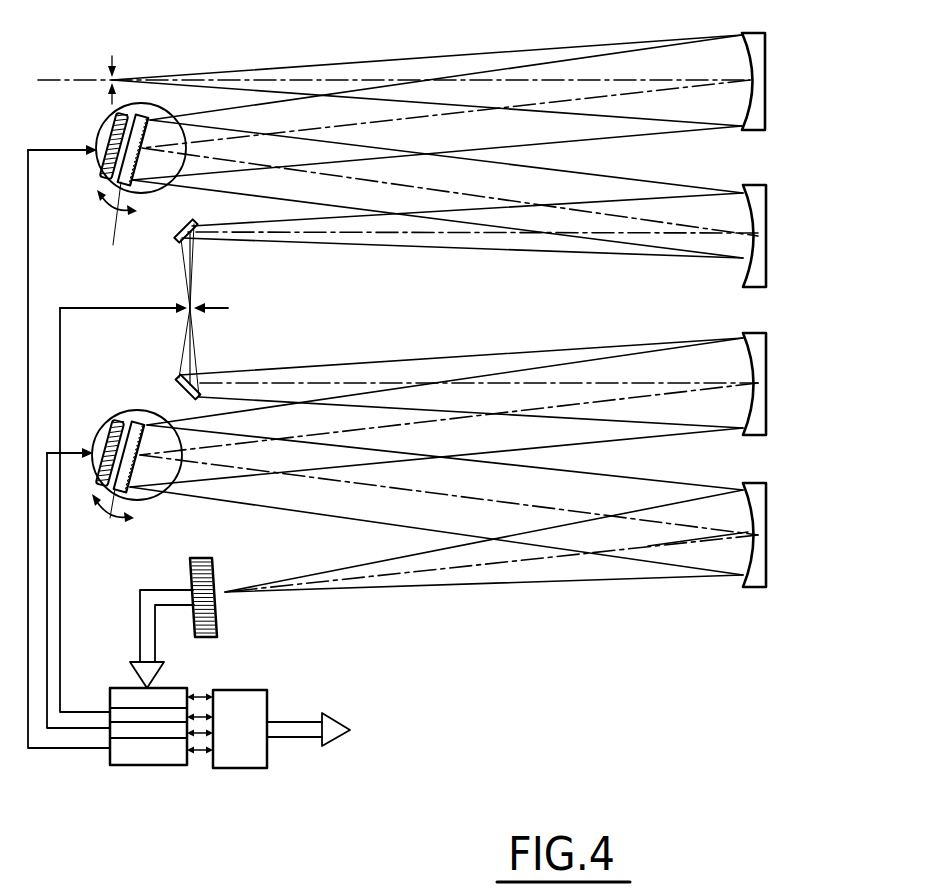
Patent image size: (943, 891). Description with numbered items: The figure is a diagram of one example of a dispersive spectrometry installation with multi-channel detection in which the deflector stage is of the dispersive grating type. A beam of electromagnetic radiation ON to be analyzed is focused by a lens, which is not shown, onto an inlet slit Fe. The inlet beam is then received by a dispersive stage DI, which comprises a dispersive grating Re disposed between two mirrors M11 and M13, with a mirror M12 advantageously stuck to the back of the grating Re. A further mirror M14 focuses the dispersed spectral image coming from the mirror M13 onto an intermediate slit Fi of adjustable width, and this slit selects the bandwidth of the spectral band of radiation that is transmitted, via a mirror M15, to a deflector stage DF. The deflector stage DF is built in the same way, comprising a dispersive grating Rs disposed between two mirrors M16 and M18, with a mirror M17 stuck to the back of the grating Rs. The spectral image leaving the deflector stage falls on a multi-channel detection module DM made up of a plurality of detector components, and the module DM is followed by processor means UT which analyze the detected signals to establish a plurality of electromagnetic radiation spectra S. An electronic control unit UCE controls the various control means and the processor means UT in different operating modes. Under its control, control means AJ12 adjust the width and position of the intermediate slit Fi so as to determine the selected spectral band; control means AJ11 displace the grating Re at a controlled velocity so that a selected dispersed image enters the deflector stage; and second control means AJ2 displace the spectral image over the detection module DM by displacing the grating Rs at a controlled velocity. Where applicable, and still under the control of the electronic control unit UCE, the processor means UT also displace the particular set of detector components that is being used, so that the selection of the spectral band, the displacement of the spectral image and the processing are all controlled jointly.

The beam of electromagnetic radiation ON is at (66, 80).
The inlet slit Fe is at (122, 44).
The mirror M11 is at (765, 57).
The mirror M12 is at (107, 185).
The dispersive grating Re is at (96, 162).
The dispersive stage DI is at (160, 186).
The mirror M14 is at (175, 239).
The mirror M13 is at (766, 230).
The intermediate slit Fi is at (214, 308).
The mirror M15 is at (177, 377).
The deflector stage DF is at (114, 465).
The dispersive grating Rs is at (141, 412).
The mirror M16 is at (766, 343).
The mirror M17 is at (110, 518).
The mirror M18 is at (766, 528).
The multi-channel detection module DM is at (216, 632).
The processor means UT is at (166, 697).
The electronic control unit UCE is at (237, 698).
The electromagnetic radiation spectra S is at (338, 727).
The control means AJ12 is at (124, 718).
The second control means AJ2 is at (143, 732).
The control means AJ11 is at (174, 760).